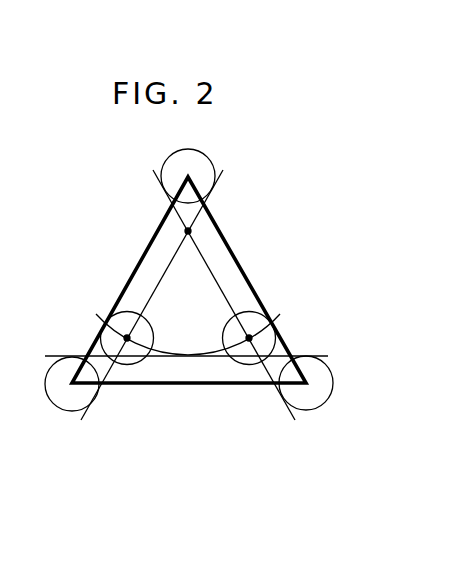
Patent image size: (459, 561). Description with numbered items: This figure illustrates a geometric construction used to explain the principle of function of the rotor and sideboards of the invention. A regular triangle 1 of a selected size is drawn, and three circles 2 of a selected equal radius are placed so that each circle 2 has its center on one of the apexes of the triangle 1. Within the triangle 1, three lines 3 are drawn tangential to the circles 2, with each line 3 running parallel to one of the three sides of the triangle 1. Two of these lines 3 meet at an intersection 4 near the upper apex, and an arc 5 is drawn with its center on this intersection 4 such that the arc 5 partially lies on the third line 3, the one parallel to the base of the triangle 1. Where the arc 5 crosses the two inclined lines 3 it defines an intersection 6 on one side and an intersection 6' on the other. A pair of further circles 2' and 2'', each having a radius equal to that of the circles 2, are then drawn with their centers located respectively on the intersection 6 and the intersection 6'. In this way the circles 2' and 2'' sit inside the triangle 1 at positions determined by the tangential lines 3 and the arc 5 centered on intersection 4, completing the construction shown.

The regular triangle 1 is at (162, 222).
The circles 2 is at (187, 285).
The circle 2' is at (95, 337).
The circle 2'' is at (288, 335).
The lines 3 is at (173, 255).
The intersection 4 is at (190, 230).
The arc 5 is at (157, 351).
The intersection 6 is at (99, 299).
The intersection 6' is at (285, 297).